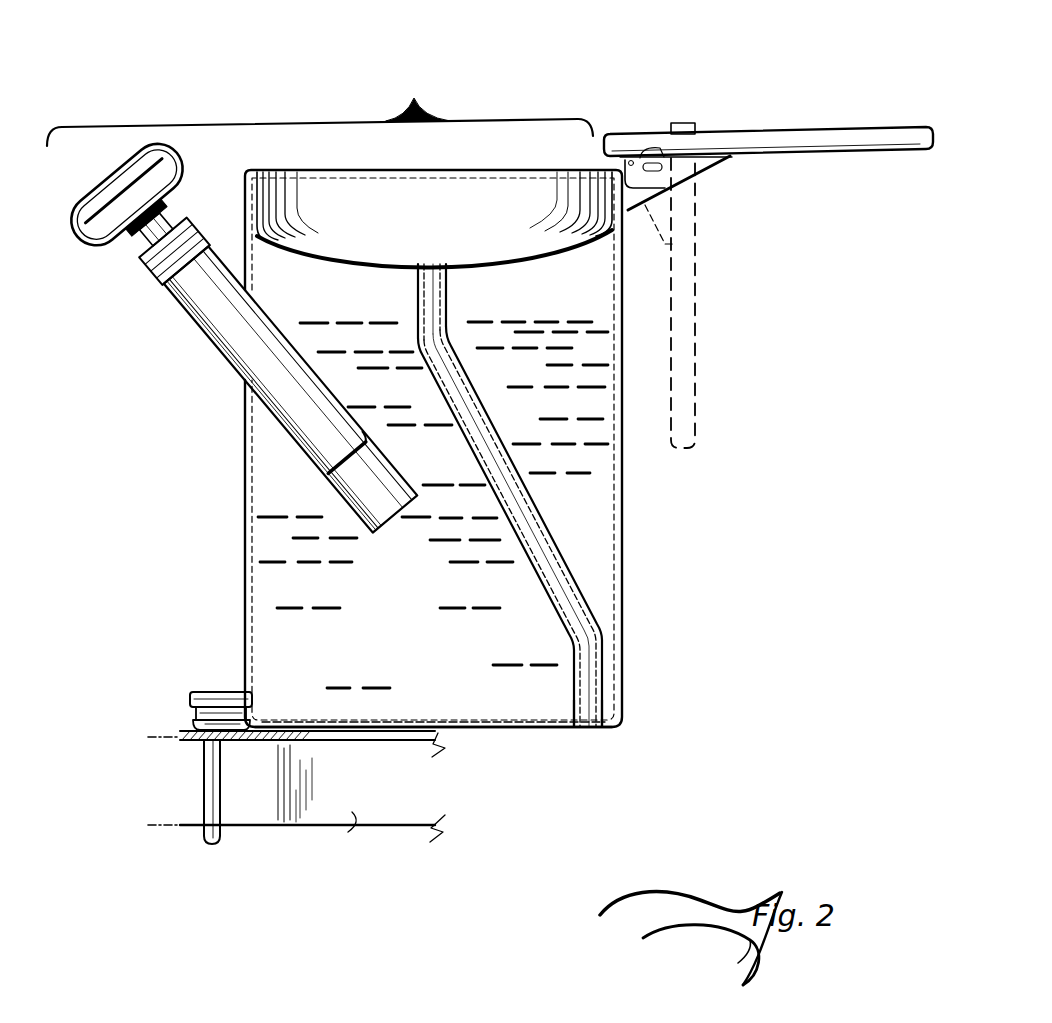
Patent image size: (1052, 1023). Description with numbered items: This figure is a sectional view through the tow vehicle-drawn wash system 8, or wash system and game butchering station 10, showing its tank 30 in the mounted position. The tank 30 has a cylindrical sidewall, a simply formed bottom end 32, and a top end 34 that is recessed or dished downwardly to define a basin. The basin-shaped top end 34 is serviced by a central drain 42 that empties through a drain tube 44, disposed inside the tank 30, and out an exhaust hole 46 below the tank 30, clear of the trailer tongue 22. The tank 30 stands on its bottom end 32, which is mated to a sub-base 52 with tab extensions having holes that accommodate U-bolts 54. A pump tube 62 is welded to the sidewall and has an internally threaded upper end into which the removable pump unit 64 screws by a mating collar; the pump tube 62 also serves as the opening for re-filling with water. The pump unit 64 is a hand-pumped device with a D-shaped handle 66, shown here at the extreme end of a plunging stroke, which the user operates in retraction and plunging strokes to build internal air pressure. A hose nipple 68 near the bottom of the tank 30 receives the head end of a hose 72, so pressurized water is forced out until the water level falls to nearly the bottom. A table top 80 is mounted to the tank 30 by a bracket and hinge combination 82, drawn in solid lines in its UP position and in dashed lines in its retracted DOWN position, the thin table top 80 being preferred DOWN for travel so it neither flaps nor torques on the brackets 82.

The wash system and game butchering station 10 is at (240, 74).
The wash system 8 is at (418, 94).
The tank 30 is at (623, 571).
The bottom end 32 is at (507, 730).
The top end 34 is at (433, 179).
The central drain 42 is at (433, 260).
The drain tube 44 is at (542, 514).
The exhaust hole 46 is at (589, 733).
The sub-base 52 is at (183, 733).
The U-bolts 54 is at (210, 843).
The pump tube 62 is at (220, 364).
The pump unit 64 is at (349, 466).
The D-shaped handle 66 is at (92, 243).
The hose nipple 68 is at (252, 702).
The hose 72 is at (203, 692).
The table top 80 is at (805, 126).
The bracket and hinge combination 82 is at (707, 173).
The trailer tongue 22 is at (296, 815).